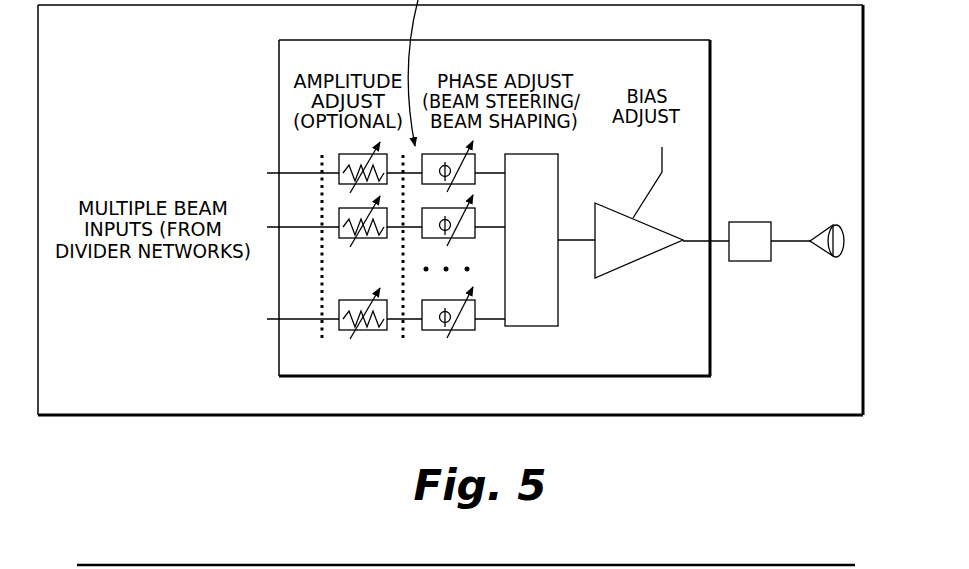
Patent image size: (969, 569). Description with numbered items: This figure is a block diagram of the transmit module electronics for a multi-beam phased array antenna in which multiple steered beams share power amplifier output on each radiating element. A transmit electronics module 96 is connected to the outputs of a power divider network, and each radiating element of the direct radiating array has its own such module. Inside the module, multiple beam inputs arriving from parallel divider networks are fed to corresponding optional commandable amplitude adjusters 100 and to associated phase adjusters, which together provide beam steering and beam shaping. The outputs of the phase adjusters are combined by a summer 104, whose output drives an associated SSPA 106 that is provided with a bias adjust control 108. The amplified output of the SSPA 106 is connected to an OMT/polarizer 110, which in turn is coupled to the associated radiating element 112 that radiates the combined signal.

The transmit electronics module 96 is at (710, 68).
The commandable amplitude adjuster 100 is at (337, 344).
The summer 104 is at (547, 326).
The SSPA 106 is at (623, 270).
The bias adjust control 108 is at (662, 150).
The OMT/polarizer 110 is at (757, 261).
The radiating element 112 is at (826, 252).